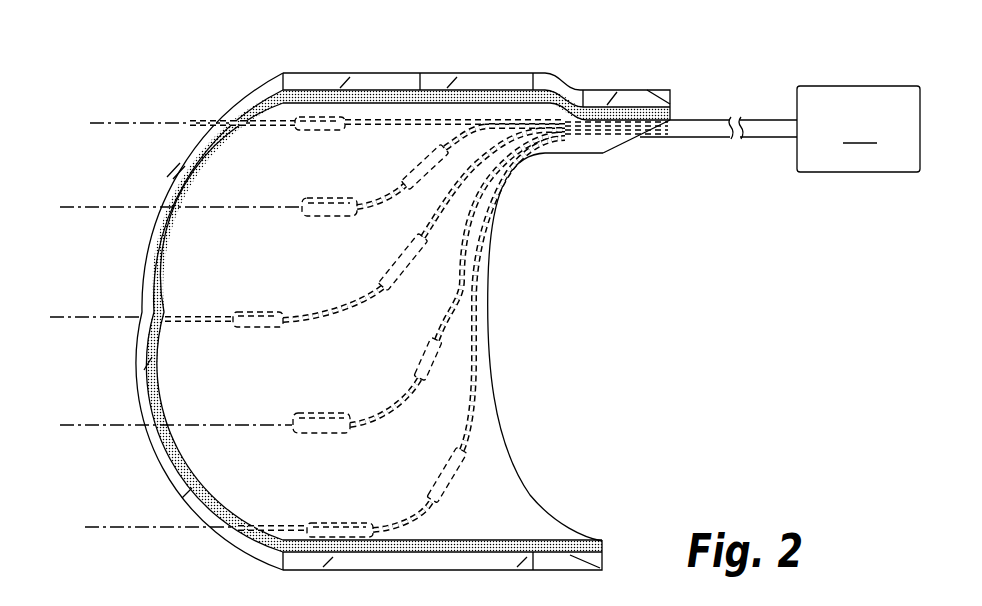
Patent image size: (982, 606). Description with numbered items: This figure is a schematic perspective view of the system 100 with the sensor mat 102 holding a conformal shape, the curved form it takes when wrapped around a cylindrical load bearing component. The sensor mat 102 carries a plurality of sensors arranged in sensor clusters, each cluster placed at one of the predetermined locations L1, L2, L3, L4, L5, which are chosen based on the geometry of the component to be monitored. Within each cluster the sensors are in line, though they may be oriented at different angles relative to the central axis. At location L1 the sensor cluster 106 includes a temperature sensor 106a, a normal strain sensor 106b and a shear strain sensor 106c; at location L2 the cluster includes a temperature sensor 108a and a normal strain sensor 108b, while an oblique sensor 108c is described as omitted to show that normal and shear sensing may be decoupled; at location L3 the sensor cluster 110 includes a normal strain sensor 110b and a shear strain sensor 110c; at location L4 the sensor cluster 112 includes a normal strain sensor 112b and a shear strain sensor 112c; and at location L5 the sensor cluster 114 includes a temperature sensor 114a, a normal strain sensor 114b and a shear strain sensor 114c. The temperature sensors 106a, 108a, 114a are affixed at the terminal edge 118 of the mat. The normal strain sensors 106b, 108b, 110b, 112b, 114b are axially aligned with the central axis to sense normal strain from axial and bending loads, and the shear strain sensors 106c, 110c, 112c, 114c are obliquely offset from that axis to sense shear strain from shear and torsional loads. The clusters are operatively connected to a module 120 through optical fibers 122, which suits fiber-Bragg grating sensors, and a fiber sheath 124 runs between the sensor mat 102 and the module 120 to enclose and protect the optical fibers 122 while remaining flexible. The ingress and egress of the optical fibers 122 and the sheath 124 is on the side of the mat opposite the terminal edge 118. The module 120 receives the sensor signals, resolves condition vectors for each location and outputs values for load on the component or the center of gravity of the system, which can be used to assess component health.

The system 100 is at (170, 104).
The sensor mat 102 is at (678, 100).
The sensor cluster 106 is at (397, 516).
The temperature sensor 106a is at (237, 553).
The normal strain sensor 106b is at (328, 521).
The shear strain sensor 106c is at (439, 481).
The temperature sensor 108a is at (248, 100).
The normal strain sensor 108b is at (320, 117).
The oblique sensor 108c is at (413, 120).
The sensor cluster 110 is at (371, 402).
The normal strain sensor 110b is at (302, 410).
The shear strain sensor 110c is at (416, 375).
The sensor cluster 112 is at (360, 195).
The normal strain sensor 112b is at (307, 221).
The shear strain sensor 112c is at (420, 167).
The sensor cluster 114 is at (341, 299).
The temperature sensor 114a is at (178, 311).
The normal strain sensor 114b is at (253, 312).
The shear strain sensor 114c is at (400, 253).
The terminal edge 118 is at (156, 199).
The module 120 is at (858, 129).
The optical fibers 122 is at (600, 137).
The fiber sheath 124 is at (710, 132).
The predetermined location L1 is at (146, 527).
The predetermined location L2 is at (157, 123).
The predetermined location L3 is at (162, 423).
The predetermined location L4 is at (166, 203).
The predetermined location L5 is at (83, 303).